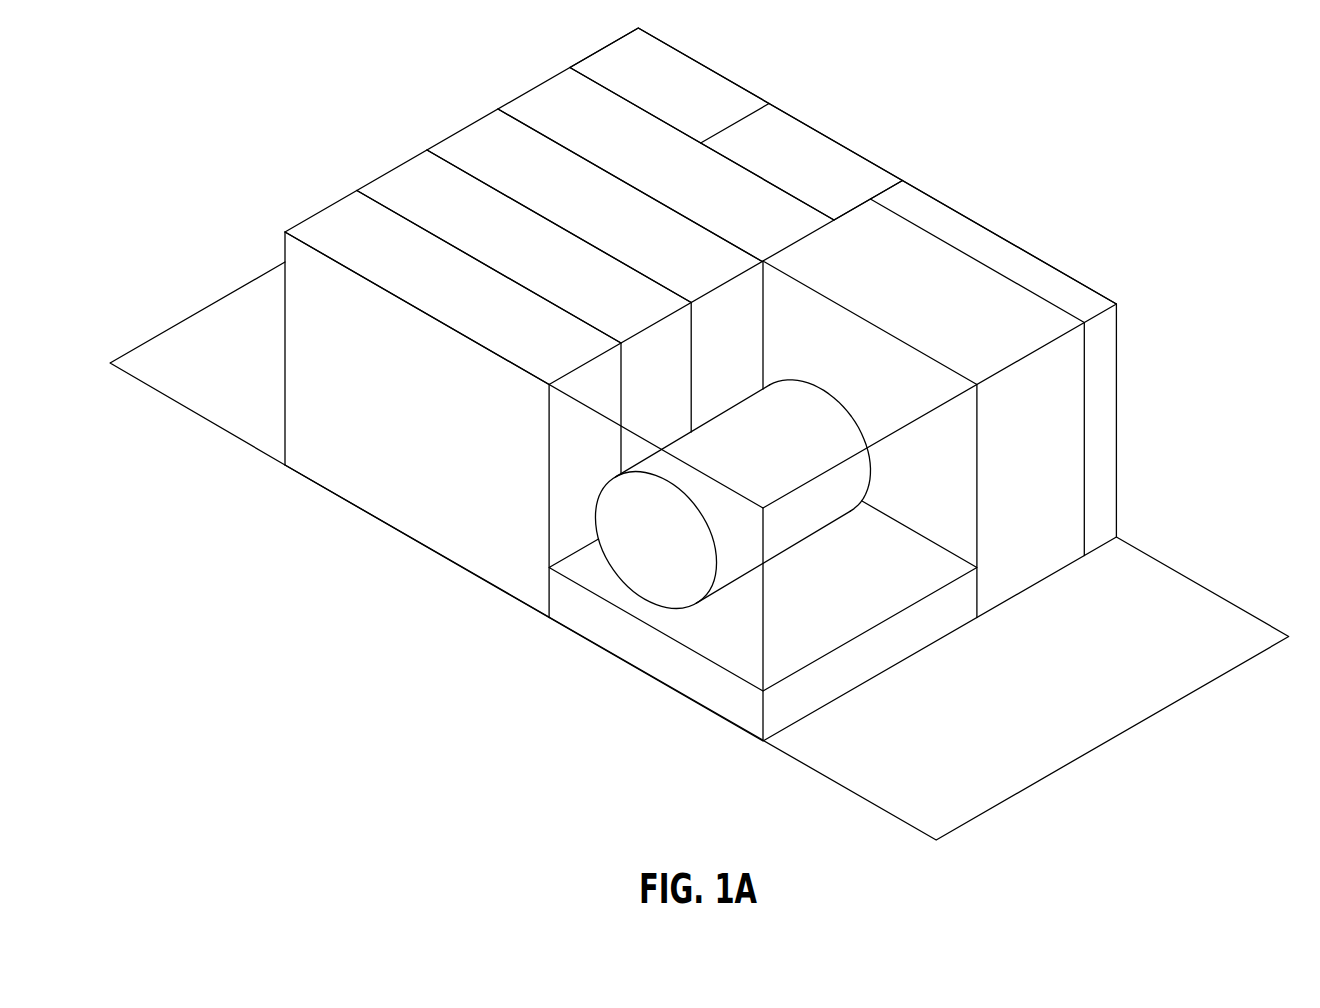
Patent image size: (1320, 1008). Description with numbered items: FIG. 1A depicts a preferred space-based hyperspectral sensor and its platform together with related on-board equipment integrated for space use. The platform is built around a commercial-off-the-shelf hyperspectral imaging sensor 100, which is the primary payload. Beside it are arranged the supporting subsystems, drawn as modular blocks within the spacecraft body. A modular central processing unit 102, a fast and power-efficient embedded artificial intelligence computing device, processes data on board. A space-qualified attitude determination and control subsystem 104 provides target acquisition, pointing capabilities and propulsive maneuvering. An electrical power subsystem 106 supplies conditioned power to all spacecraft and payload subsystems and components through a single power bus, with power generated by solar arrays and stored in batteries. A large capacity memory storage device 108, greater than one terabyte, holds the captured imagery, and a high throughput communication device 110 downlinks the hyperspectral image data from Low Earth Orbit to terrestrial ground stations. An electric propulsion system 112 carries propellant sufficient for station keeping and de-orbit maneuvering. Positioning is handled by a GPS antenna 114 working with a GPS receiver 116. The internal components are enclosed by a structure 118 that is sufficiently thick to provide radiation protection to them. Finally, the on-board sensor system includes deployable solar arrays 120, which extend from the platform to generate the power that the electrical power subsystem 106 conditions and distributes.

The hyperspectral imaging sensor 100 is at (1047, 457).
The modular central processing unit 102 is at (470, 138).
The attitude determination and control subsystem 104 is at (818, 140).
The electrical power subsystem 106 is at (547, 92).
The memory storage device 108 is at (393, 180).
The communication device 110 is at (327, 220).
The electric propulsion system 112 is at (618, 57).
The GPS antenna 114 is at (1020, 258).
The GPS receiver 116 is at (638, 648).
The structure 118 is at (283, 463).
The deployable solar arrays 120 is at (870, 775).